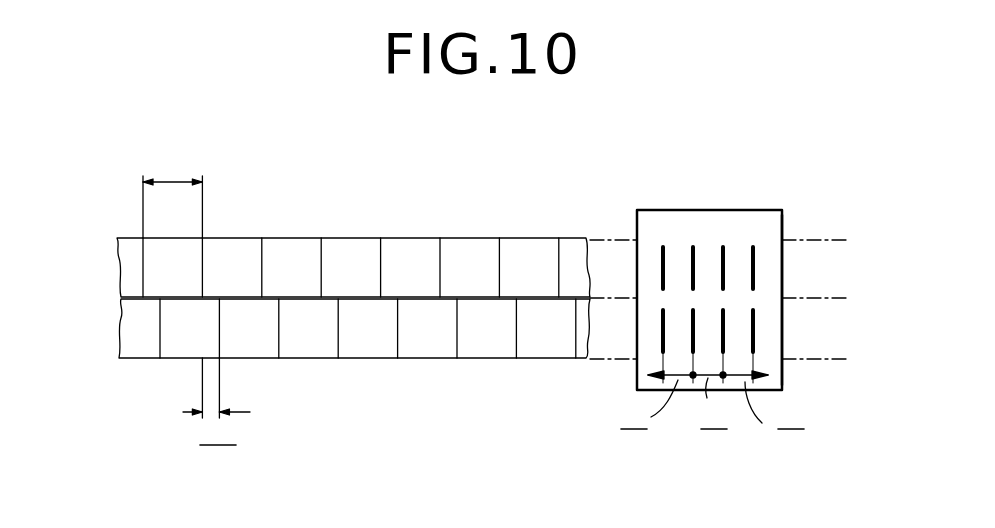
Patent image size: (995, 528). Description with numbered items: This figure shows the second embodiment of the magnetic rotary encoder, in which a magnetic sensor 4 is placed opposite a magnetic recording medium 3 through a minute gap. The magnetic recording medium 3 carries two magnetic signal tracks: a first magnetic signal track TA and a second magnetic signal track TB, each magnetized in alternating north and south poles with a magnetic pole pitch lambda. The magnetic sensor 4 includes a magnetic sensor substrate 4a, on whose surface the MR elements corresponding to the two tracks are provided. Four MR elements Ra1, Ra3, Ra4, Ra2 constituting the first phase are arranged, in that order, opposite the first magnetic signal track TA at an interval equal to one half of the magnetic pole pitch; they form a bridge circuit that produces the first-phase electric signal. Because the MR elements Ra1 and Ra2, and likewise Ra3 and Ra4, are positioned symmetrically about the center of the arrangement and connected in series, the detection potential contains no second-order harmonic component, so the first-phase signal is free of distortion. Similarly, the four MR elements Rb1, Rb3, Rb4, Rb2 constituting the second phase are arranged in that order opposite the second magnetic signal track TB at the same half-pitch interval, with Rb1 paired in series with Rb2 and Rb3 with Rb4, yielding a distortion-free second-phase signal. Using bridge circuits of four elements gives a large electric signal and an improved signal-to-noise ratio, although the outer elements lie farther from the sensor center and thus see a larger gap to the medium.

The magnetic recording medium 3 is at (468, 238).
The magnetic sensor 4 is at (793, 222).
The magnetic sensor substrate 4a is at (782, 290).
The first magnetic signal track TA is at (117, 253).
The second magnetic signal track TB is at (117, 311).
The MR element Ra1 is at (662, 258).
The MR element Ra2 is at (752, 258).
The MR element Ra3 is at (692, 258).
The MR element Ra4 is at (723, 258).
The MR element Rb1 is at (663, 327).
The MR element Rb2 is at (753, 342).
The MR element Rb3 is at (693, 347).
The MR element Rb4 is at (728, 343).